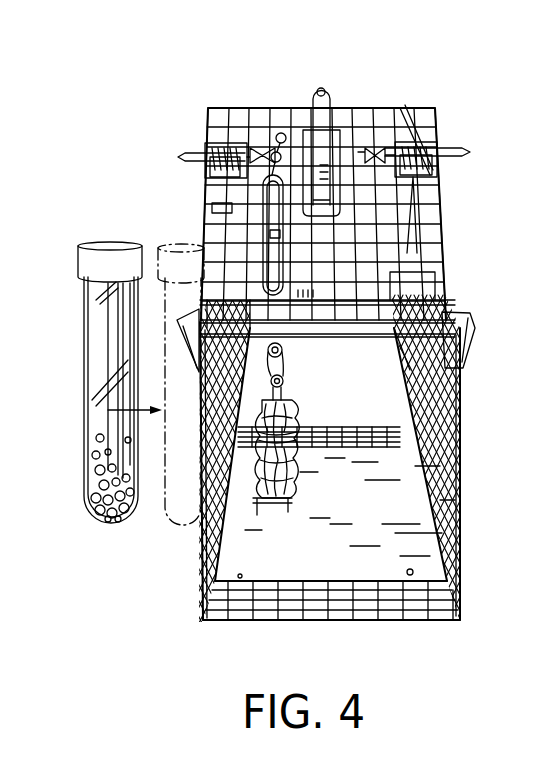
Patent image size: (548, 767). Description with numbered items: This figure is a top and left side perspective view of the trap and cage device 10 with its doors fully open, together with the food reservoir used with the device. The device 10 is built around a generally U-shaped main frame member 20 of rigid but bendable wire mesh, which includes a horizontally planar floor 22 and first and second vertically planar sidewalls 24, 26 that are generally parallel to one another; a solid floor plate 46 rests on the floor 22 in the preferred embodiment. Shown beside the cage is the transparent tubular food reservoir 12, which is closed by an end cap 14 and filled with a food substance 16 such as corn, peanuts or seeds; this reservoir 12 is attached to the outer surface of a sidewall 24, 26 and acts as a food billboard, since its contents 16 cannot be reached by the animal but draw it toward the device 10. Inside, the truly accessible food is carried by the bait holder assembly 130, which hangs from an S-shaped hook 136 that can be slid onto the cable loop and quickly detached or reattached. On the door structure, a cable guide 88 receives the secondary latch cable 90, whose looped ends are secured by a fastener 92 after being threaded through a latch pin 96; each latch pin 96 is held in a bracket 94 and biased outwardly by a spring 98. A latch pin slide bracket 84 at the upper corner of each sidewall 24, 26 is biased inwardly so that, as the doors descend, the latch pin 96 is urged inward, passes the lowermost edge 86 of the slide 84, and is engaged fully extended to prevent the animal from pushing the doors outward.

The trap and cage device 10 is at (176, 200).
The food reservoir 12 is at (80, 290).
The end cap 14 is at (118, 250).
The food substance 16 is at (105, 525).
The main frame member 20 is at (465, 472).
The floor 22 is at (385, 608).
The first sidewall 24 is at (204, 545).
The second sidewall 26 is at (460, 537).
The floor plate 46 is at (302, 560).
The latch pin slide bracket 84 is at (465, 320).
The lowermost edge 86 is at (440, 367).
The cable guide 88 is at (282, 136).
The secondary latch cable 90 is at (333, 100).
The fastener 92 is at (370, 152).
The bracket 94 is at (432, 172).
The latch pin 96 is at (457, 151).
The spring 98 is at (428, 104).
The bait holder assembly 130 is at (306, 410).
The S-shaped hook 136 is at (283, 372).